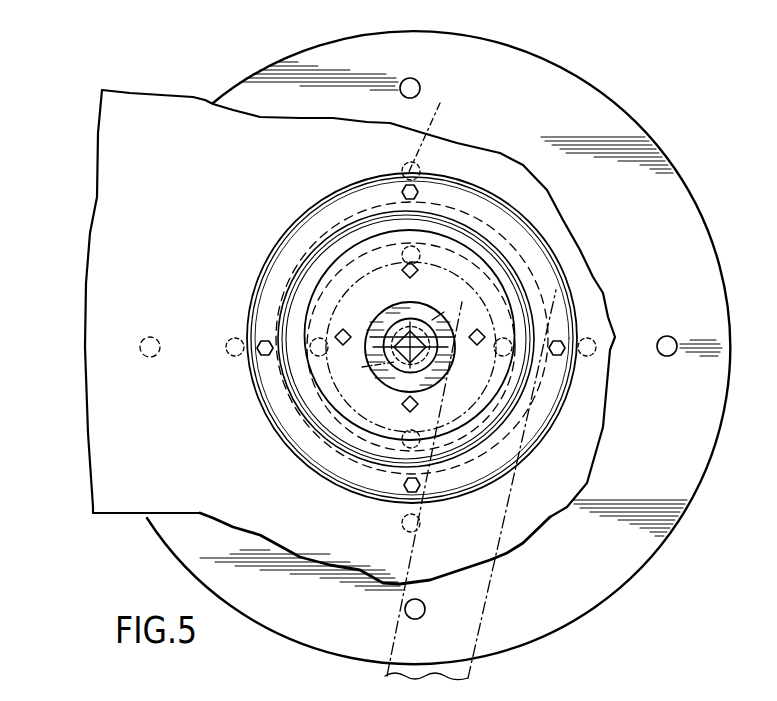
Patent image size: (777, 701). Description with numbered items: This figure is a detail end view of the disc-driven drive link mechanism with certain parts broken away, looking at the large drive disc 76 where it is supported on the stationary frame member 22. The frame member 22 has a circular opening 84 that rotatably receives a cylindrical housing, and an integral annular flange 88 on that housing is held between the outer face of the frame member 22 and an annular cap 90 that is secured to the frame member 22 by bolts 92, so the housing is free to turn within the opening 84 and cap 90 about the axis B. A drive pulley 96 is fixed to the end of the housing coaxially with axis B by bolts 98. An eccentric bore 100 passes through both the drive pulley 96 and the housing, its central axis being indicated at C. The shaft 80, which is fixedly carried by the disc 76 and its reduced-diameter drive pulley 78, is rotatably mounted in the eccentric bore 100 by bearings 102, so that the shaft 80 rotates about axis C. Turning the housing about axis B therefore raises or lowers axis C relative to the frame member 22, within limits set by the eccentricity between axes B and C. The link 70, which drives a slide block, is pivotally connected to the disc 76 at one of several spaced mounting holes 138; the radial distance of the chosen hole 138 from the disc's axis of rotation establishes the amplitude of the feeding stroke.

The stationary frame member 22 is at (128, 195).
The link 70 is at (490, 597).
The drive disc 76 is at (687, 252).
The drive pulley 78 is at (308, 452).
The shaft 80 is at (392, 310).
The circular opening 84 is at (318, 339).
The annular flange 88 is at (330, 278).
The annular cap 90 is at (268, 412).
The bolts 92 is at (418, 187).
The drive pulley 96 is at (310, 328).
The bolts 98 is at (404, 410).
The eccentric bore 100 is at (413, 305).
The bearings 102 is at (437, 361).
The mounting holes 138 is at (421, 88).
The axis B is at (446, 310).
The axis C is at (371, 367).